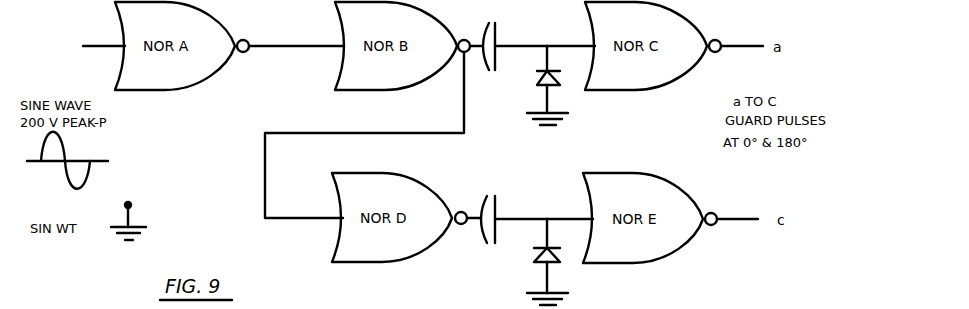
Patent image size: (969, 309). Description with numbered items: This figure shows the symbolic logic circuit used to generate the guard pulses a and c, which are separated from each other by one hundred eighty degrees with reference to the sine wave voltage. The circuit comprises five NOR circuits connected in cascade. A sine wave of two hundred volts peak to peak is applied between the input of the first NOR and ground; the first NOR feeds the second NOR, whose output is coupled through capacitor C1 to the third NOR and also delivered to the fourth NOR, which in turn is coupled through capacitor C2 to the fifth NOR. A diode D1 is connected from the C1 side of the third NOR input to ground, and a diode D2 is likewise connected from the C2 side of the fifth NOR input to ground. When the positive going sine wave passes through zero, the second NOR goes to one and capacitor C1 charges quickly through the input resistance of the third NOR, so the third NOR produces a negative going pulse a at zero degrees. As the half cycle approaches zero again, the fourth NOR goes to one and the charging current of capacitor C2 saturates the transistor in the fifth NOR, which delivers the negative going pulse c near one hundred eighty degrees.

The capacitor C1 is at (536, 35).
The diode D1 is at (535, 85).
The capacitor C2 is at (536, 206).
The diode D2 is at (534, 262).